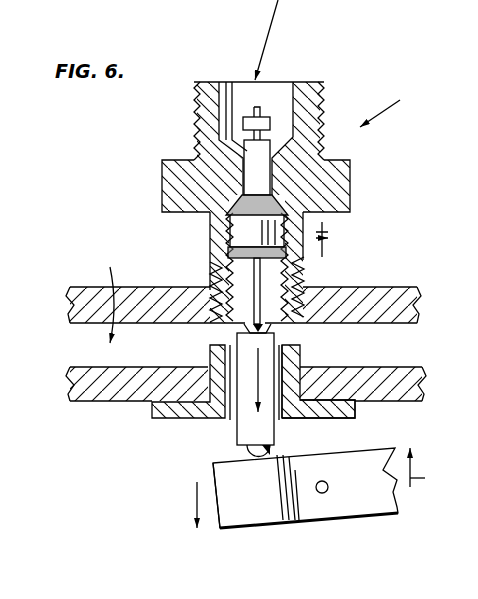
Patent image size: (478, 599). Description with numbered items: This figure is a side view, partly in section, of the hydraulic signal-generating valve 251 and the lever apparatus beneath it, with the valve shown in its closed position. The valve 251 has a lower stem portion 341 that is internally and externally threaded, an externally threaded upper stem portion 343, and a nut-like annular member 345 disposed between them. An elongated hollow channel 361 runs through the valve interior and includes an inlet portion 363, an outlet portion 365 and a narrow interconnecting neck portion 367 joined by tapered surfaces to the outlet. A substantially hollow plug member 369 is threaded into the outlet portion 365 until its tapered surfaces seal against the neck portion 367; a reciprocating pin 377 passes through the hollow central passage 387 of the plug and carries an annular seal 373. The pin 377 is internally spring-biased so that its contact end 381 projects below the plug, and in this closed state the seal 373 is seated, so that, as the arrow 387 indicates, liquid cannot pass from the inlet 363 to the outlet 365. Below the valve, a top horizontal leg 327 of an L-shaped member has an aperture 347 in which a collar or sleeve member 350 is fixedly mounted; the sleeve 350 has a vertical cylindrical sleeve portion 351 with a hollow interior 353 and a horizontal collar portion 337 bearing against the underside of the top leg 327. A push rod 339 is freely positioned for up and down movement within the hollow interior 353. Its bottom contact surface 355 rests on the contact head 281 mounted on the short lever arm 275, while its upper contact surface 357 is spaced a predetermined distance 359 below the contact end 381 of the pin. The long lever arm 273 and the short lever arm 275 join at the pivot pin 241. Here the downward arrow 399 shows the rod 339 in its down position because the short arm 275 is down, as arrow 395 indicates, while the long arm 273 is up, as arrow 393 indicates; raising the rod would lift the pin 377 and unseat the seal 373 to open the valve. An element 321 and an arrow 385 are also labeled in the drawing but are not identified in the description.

The pivot pin 241 is at (328, 487).
The hydraulic valve 251 is at (396, 104).
The long lever arm 273 is at (385, 487).
The short lever arm 275 is at (294, 516).
The contact head portion 281 is at (222, 465).
The upper plate 321 is at (385, 300).
The top horizontal leg 327 is at (422, 388).
The horizontal collar portion 337 is at (315, 408).
The push rod 339 is at (255, 392).
The lower stem portion 341 is at (208, 262).
The upper stem portion 343 is at (197, 130).
The nut-like annular member 345 is at (170, 187).
The aperture 347 is at (305, 380).
The collar or sleeve member 350 is at (198, 352).
The cylindrical sleeve portion 351 is at (210, 375).
The hollow interior 353 is at (284, 350).
The bottom contact surface 355 is at (287, 452).
The upper contact surface 357 is at (268, 330).
The predetermined distance 359 is at (101, 293).
The hollow channel 361 is at (213, 258).
The inlet portion 363 is at (278, 95).
The outlet portion 365 is at (250, 305).
The neck portion 367 is at (278, 199).
The plug member 369 is at (277, 163).
The annular seal 373 is at (267, 125).
The pin member 377 is at (255, 107).
The contact end 381 is at (248, 328).
The flow arrow 385 is at (270, 25).
The hollow central passage 387 is at (328, 225).
The directional arrow 393 is at (412, 478).
The directional arrow 395 is at (197, 507).
The downwardly directed arrow 399 is at (236, 436).